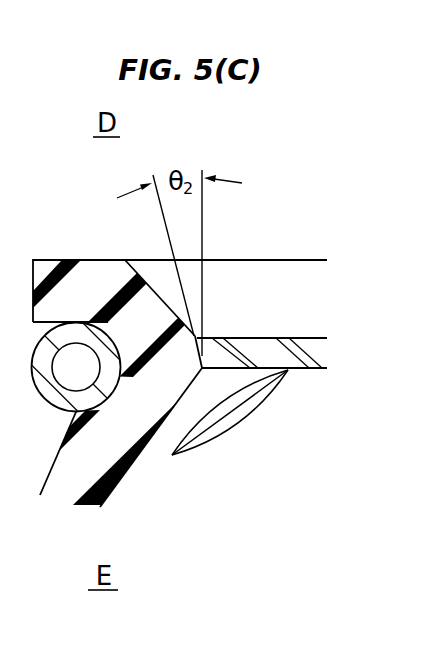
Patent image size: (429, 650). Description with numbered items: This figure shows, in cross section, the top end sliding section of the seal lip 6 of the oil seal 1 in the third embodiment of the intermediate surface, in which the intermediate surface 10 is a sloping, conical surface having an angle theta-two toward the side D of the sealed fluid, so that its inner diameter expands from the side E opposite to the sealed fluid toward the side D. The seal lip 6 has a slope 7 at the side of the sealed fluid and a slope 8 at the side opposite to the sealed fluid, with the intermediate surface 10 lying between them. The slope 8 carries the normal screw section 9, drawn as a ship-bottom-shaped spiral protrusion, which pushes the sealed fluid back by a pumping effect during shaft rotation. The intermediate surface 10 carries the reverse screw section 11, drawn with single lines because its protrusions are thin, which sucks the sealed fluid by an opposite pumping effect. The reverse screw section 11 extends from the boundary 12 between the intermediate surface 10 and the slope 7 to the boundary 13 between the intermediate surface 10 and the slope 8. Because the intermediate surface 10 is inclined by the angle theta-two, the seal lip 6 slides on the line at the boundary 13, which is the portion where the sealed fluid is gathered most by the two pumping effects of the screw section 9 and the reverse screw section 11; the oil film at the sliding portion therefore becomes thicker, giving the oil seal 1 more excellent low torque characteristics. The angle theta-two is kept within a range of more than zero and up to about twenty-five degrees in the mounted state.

The oil seal 1 is at (45, 257).
The seal lip 6 is at (88, 280).
The slope at the side of sealed fluid 7 is at (151, 291).
The slope at the side opposite to the sealed fluid 8 is at (153, 436).
The screw section 9 is at (212, 434).
The intermediate surface 10 is at (203, 352).
The reverse screw section 11 is at (250, 338).
The boundary 12 is at (307, 338).
The boundary 13 is at (303, 369).